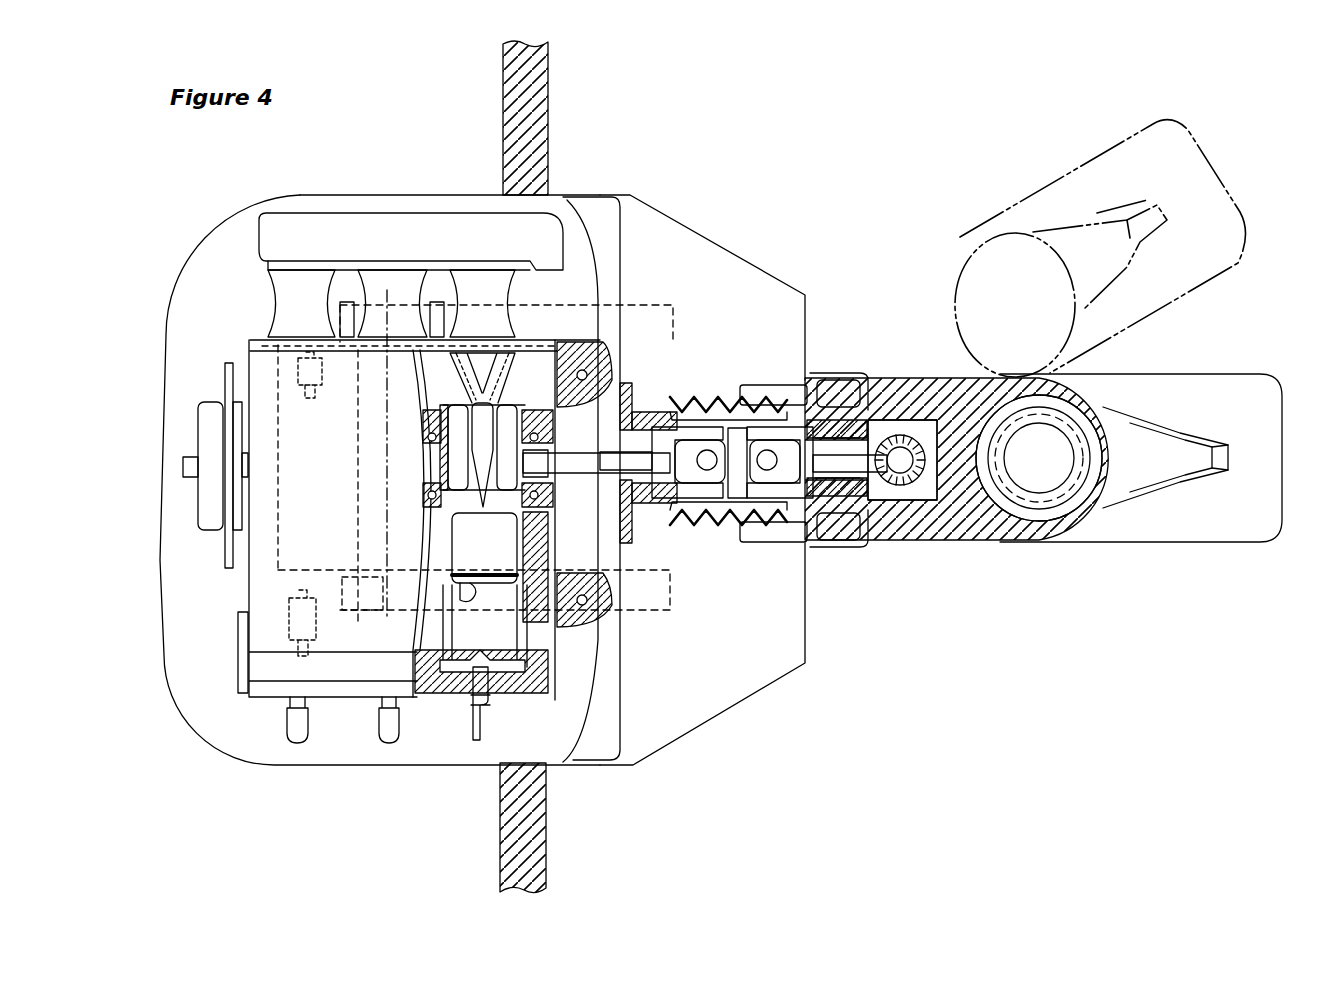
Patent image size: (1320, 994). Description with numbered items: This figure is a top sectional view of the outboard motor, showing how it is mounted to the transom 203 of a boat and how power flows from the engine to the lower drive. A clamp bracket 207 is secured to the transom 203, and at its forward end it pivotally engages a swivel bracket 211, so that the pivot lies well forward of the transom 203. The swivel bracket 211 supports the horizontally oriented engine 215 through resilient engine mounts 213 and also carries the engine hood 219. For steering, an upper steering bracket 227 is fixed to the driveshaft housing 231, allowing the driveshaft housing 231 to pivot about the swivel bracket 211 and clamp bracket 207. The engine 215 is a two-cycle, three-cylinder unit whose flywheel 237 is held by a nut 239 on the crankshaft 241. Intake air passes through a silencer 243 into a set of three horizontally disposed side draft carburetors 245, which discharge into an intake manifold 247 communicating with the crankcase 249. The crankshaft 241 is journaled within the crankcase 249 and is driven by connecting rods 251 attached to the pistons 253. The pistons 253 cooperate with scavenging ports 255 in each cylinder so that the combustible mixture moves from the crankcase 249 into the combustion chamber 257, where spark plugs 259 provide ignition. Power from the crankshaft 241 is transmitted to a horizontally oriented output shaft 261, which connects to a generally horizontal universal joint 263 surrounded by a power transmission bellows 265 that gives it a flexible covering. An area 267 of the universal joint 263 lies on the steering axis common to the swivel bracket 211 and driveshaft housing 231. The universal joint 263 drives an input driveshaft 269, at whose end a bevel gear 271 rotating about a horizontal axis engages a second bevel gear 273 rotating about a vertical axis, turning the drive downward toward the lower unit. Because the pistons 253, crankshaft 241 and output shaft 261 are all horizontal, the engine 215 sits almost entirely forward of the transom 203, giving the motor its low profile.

The transom 203 is at (517, 110).
The clamp bracket 207 is at (595, 210).
The swivel bracket 211 is at (727, 390).
The resilient engine mounts 213 is at (300, 355).
The engine 215 is at (288, 605).
The engine hood 219 is at (165, 625).
The upper steering bracket 227 is at (775, 385).
The driveshaft housing 231 is at (1080, 512).
The flywheel 237 is at (205, 400).
The nut 239 is at (190, 455).
The crankshaft 241 is at (183, 468).
The silencer 243 is at (405, 220).
The side draft carburetors 245 is at (510, 320).
The intake manifold 247 is at (490, 395).
The crankcase 249 is at (432, 470).
The connecting rods 251 is at (385, 480).
The pistons 253 is at (457, 560).
The scavenging ports 255 is at (577, 473).
The combustion chamber 257 is at (470, 665).
The spark plugs 259 is at (470, 722).
The output shaft 261 is at (622, 500).
The universal joint 263 is at (715, 525).
The power transmission bellows 265 is at (745, 515).
The area of universal joint 267 is at (775, 540).
The input driveshaft 269 is at (850, 462).
The bevel gear 271 is at (983, 378).
The bevel gear 273 is at (925, 485).